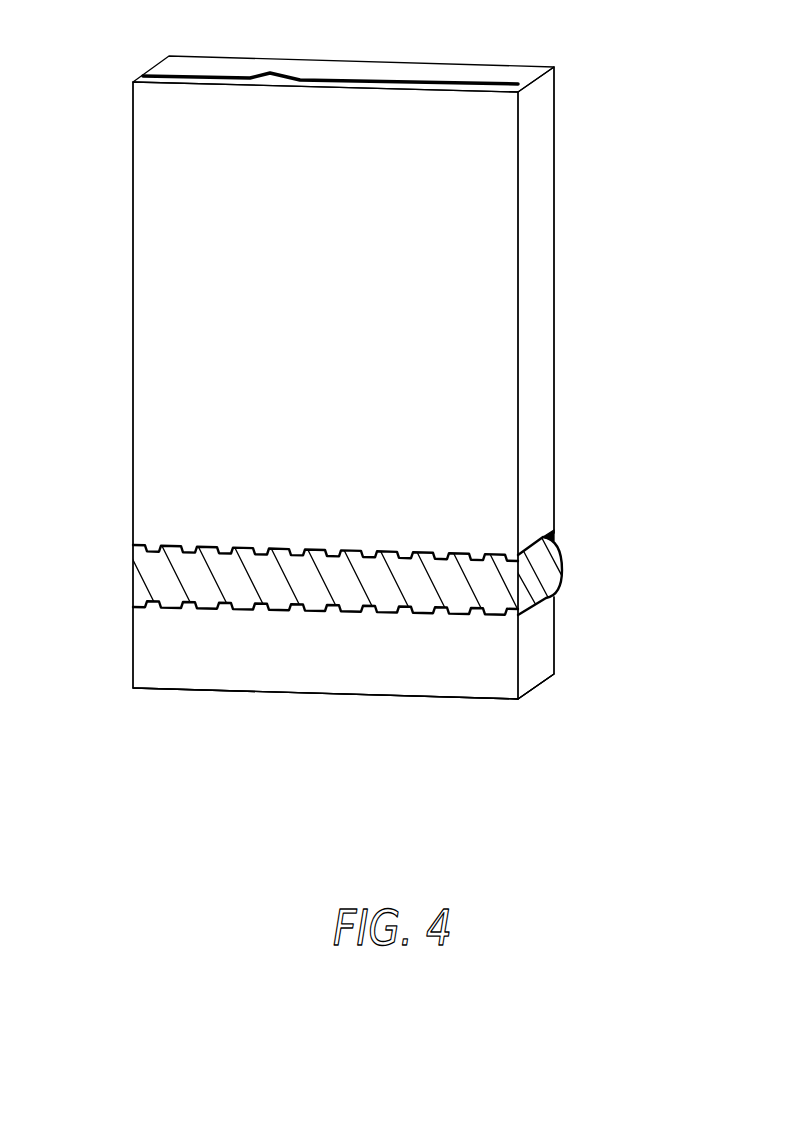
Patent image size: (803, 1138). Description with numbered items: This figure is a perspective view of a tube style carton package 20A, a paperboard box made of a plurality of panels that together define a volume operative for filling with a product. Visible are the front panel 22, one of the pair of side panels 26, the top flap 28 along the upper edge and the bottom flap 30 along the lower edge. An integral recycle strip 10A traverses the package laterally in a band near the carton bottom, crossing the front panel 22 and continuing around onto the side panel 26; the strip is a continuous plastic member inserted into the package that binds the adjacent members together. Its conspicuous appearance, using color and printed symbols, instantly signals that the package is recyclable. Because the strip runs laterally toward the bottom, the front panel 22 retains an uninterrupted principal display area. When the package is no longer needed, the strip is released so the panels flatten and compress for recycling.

The integral recycle strip 10A is at (150, 580).
The tube style carton package 20A is at (606, 242).
The front panel 22 is at (148, 155).
The side panel 26 is at (554, 322).
The top flap 28 is at (473, 73).
The bottom flap 30 is at (473, 700).